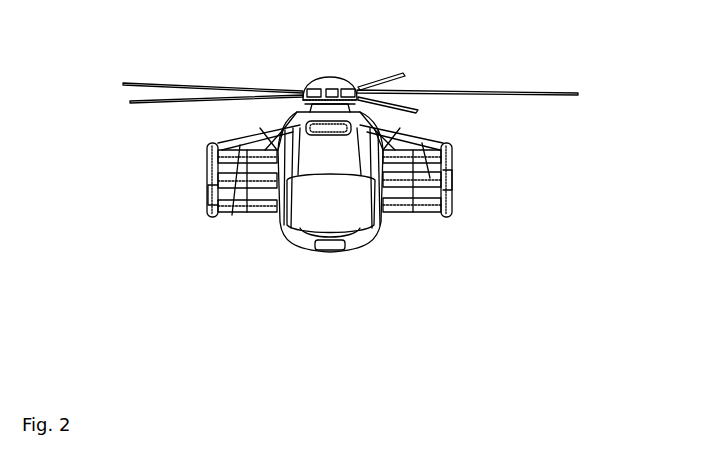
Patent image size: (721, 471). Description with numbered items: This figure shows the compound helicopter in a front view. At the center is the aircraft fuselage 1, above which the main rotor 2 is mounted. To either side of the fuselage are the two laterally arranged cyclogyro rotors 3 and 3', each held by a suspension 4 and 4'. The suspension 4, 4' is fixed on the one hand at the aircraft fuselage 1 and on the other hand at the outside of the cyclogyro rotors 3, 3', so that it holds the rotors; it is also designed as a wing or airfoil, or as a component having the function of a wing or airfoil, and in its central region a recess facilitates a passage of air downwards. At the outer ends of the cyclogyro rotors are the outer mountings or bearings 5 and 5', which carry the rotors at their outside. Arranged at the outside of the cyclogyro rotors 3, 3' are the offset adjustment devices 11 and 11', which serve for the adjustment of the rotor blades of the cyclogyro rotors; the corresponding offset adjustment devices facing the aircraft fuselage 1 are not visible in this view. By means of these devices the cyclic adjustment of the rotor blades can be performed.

The aircraft fuselage 1 is at (338, 197).
The main rotor 2 is at (353, 93).
The cyclogyro rotor 3 is at (468, 211).
The cyclogyro rotor 3' is at (233, 256).
The suspension 4 is at (475, 149).
The suspension 4' is at (186, 130).
The outer mounting or bearing 5 is at (515, 187).
The outer mounting or bearing 5' is at (156, 191).
The offset adjustment device 11 is at (525, 223).
The offset adjustment device 11' is at (168, 249).